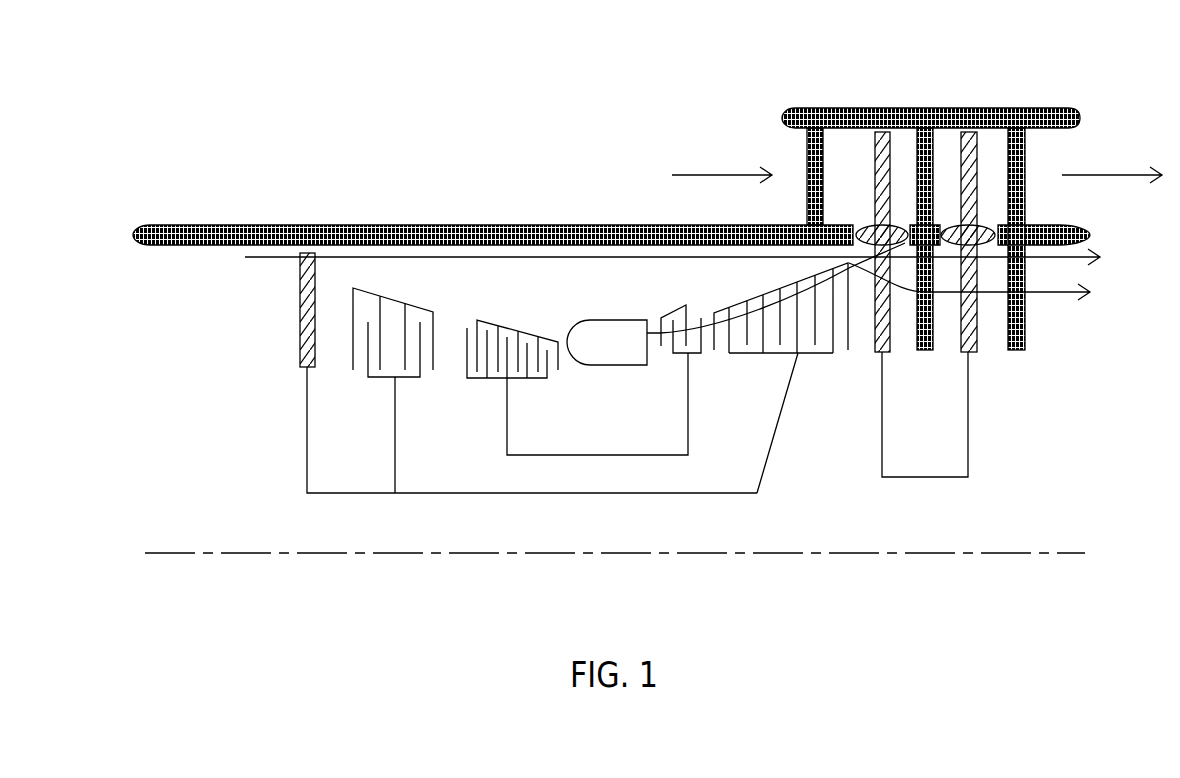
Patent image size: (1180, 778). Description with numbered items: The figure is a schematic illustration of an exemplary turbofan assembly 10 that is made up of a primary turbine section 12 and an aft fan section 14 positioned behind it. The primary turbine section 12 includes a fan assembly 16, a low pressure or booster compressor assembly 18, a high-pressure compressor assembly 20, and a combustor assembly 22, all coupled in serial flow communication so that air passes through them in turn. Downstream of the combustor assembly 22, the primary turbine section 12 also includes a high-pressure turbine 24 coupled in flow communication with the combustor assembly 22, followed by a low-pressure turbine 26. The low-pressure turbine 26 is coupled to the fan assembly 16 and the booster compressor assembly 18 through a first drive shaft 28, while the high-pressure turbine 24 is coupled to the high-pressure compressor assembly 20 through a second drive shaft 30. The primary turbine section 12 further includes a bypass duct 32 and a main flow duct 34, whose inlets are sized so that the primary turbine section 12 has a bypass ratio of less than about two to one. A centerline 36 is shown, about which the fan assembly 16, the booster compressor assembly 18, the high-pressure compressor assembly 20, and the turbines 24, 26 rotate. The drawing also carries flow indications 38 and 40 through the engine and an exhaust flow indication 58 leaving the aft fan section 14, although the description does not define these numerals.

The turbofan assembly 10 is at (332, 53).
The primary turbine section 12 is at (457, 174).
The aft fan section 14 is at (1032, 85).
The fan assembly 16 is at (272, 343).
The booster compressor assembly 18 is at (375, 398).
The high-pressure compressor assembly 20 is at (497, 398).
The combustor assembly 22 is at (610, 308).
The high-pressure turbine 24 is at (673, 388).
The low-pressure turbine 26 is at (763, 370).
The first drive shaft 28 is at (602, 493).
The second drive shaft 30 is at (565, 453).
The bypass duct 32 is at (410, 276).
The main flow duct 34 is at (333, 322).
The centerline 36 is at (1067, 553).
The bypass airflow 38 is at (690, 258).
The core exhaust flow 40 is at (757, 318).
The fan exhaust flow 58 is at (1105, 175).